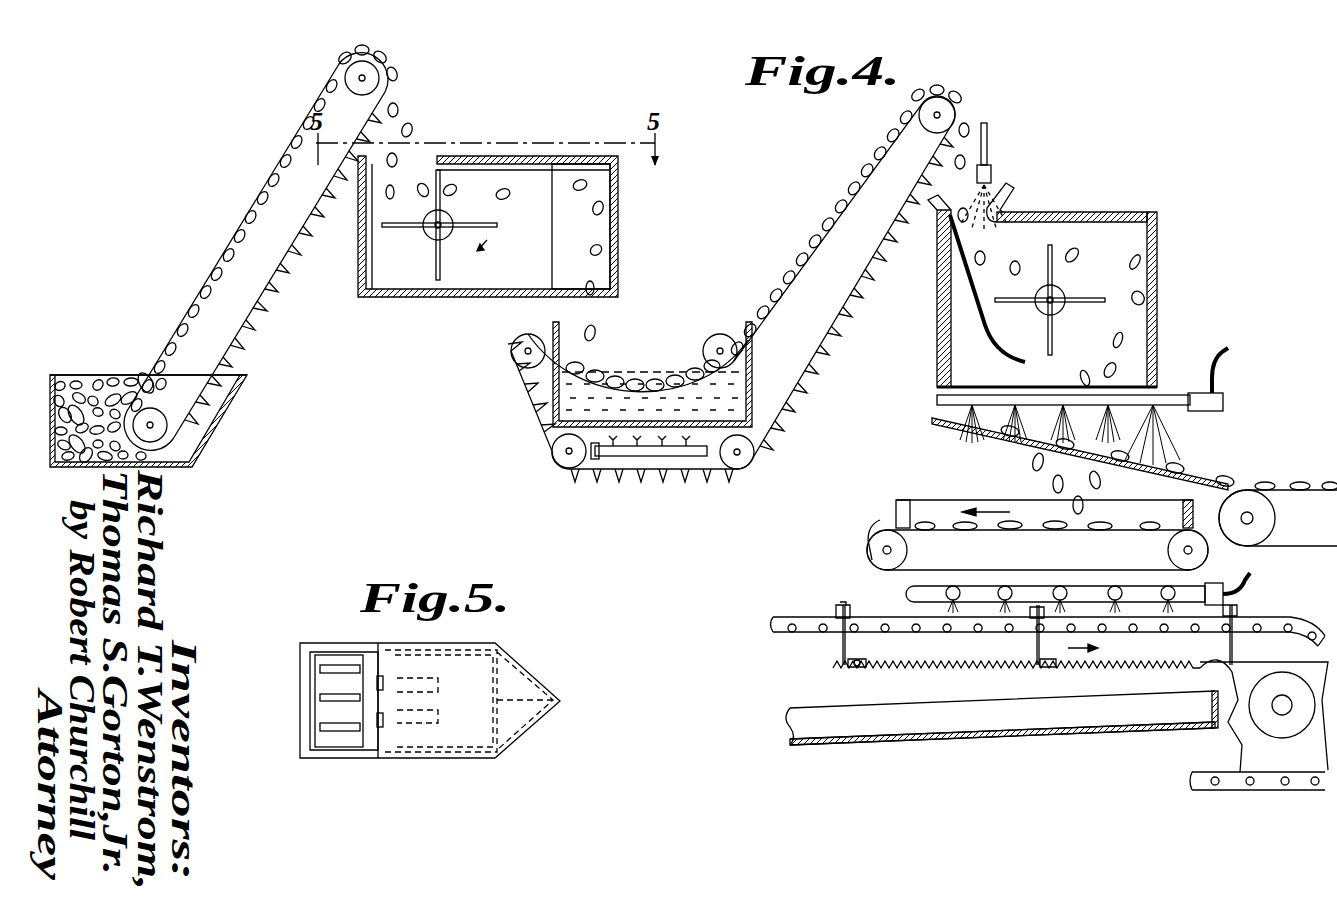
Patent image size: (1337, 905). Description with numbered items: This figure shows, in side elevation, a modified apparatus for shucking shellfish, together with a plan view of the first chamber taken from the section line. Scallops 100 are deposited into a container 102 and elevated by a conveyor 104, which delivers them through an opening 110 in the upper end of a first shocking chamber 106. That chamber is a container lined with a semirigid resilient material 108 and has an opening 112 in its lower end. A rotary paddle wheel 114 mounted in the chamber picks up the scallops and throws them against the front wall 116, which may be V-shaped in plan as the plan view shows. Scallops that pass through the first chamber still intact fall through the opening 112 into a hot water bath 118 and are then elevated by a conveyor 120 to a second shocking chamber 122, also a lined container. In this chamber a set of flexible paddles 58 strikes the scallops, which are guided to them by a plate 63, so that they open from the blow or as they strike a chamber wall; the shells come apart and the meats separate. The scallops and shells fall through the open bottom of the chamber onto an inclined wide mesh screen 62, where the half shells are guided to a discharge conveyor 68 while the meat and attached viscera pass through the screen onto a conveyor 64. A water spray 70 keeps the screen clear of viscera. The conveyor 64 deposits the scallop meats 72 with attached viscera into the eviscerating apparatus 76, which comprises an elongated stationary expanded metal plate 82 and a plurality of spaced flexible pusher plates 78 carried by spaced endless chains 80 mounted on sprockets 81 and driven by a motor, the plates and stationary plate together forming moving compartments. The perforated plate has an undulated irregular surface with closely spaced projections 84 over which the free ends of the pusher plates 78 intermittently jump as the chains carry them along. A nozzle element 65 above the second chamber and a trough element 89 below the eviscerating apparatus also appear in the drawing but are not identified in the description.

In FIG. 4, the scallops 100 is at (95, 383).
In FIG. 4, the container 102 is at (213, 428).
In FIG. 4, the conveyor 104 is at (258, 190).
In FIG. 4, the first shocking chamber 106 is at (505, 155).
In FIG. 5, the first shocking chamber 106 is at (470, 760).
In FIG. 4, the semirigid resilient material 108 is at (492, 165).
In FIG. 4, the opening in lower end 112 is at (573, 290).
In FIG. 4, the rotary paddle wheel 114 is at (478, 222).
In FIG. 5, the rotary paddle wheel 114 is at (333, 705).
In FIG. 4, the front wall 116 is at (607, 225).
In FIG. 5, the front wall 116 is at (498, 698).
In FIG. 4, the hot water bath 118 is at (640, 367).
In FIG. 4, the conveyor 120 is at (843, 192).
In FIG. 4, the second shocking chamber 122 is at (1078, 210).
In FIG. 4, the spray nozzle 65 is at (990, 177).
In FIG. 4, the plate 63 is at (982, 287).
In FIG. 4, the flexible paddles 58 is at (1080, 298).
In FIG. 4, the water spray 70 is at (1175, 439).
In FIG. 4, the inclined wide mesh screen 62 is at (977, 437).
In FIG. 4, the discharge conveyor 68 is at (1272, 490).
In FIG. 4, the conveyor 64 is at (907, 500).
In FIG. 4, the endless chains 80 is at (1285, 627).
In FIG. 4, the eviscerating apparatus 76 is at (830, 610).
In FIG. 4, the flexible pusher plates 78 is at (843, 646).
In FIG. 4, the scallop meats 72 is at (860, 661).
In FIG. 4, the projections 84 is at (937, 668).
In FIG. 4, the expanded metal plate 82 is at (1108, 666).
In FIG. 4, the sprockets 81 is at (1236, 742).
In FIG. 4, the collecting trough 89 is at (1015, 735).
In FIG. 5, the opening in upper end 110 is at (327, 686).